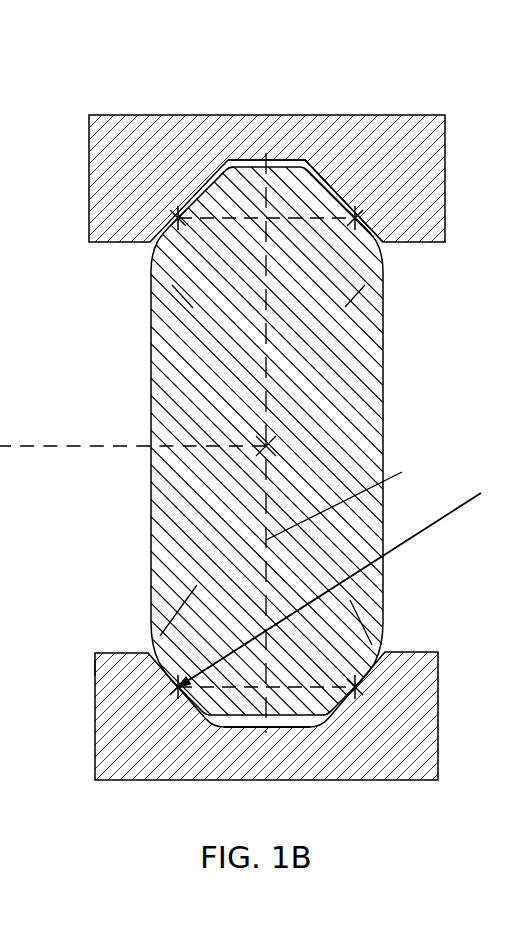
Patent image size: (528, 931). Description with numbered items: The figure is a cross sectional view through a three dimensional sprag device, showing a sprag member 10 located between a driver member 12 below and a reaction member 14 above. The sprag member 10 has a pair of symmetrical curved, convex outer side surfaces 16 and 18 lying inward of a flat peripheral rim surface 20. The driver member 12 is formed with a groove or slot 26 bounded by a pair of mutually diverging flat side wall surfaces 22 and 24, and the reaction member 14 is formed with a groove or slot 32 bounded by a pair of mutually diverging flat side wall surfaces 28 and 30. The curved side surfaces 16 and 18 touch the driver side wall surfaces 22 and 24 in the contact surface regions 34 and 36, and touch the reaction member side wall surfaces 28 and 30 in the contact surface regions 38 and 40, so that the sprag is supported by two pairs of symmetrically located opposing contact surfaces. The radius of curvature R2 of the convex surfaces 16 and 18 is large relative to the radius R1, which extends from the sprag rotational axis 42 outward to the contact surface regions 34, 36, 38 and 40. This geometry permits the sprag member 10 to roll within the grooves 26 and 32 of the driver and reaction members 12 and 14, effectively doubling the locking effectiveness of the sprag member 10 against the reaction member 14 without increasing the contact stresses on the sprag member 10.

The sprag member 10 is at (370, 393).
The driver member 12 is at (438, 708).
The reaction member 14 is at (445, 127).
The curved outer side surface 16 is at (197, 585).
The curved outer side surface 18 is at (350, 600).
The flat peripheral rim surface 20 is at (298, 715).
The side wall surface 22 is at (95, 667).
The side wall surface 24 is at (333, 712).
The groove or slot 26 is at (231, 727).
The side wall surface 28 is at (200, 178).
The side wall surface 30 is at (322, 172).
The groove or slot 32 is at (283, 152).
The contact surface region 34 is at (178, 687).
The contact surface region 36 is at (355, 687).
The contact surface region 38 is at (178, 218).
The contact surface region 40 is at (355, 218).
The sprag rotational axis 42 is at (270, 444).
The radius R1 is at (402, 472).
The radius of curvature R2 is at (413, 540).